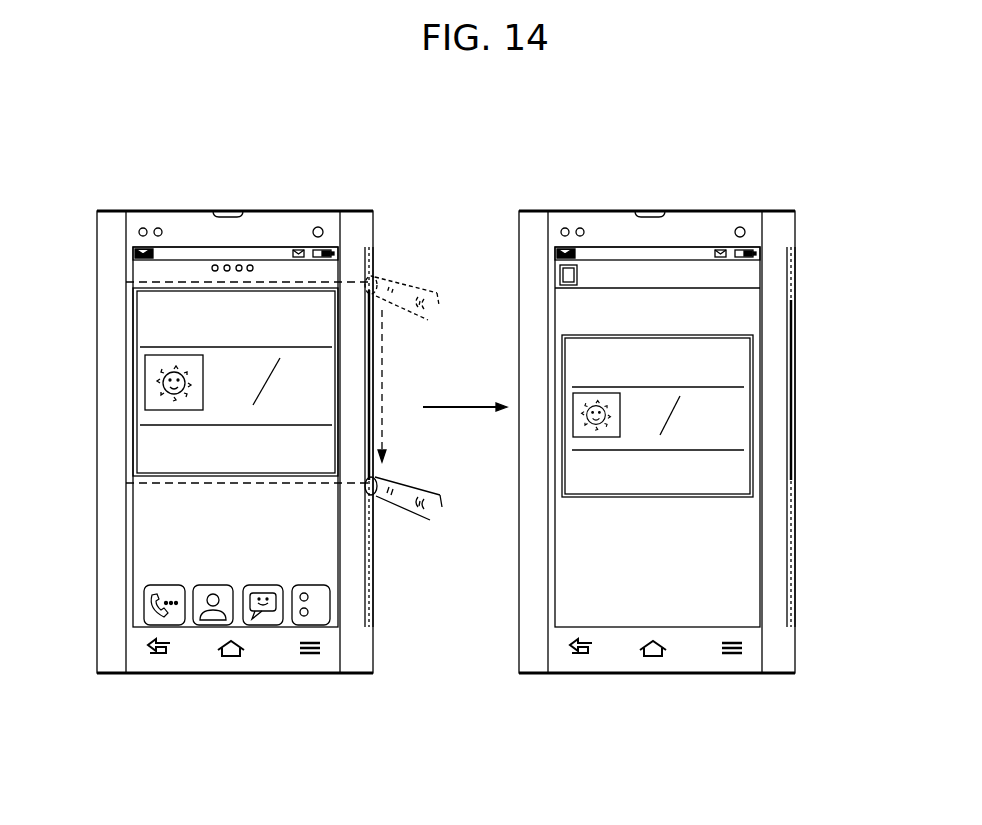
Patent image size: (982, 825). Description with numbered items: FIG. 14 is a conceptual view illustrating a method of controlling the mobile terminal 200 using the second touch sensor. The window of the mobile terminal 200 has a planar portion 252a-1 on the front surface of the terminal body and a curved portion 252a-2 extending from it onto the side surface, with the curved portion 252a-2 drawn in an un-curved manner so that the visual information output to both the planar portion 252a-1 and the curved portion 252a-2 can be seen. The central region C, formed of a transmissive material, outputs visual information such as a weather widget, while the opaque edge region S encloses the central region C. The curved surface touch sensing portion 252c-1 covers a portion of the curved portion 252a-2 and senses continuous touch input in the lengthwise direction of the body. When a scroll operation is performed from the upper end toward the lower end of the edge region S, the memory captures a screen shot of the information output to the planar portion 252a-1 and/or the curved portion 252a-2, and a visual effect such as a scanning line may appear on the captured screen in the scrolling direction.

The mobile terminal 200 is at (176, 192).
The planar portion 252a-1 is at (243, 252).
The curved portion 252a-2 is at (352, 252).
The curved surface touch sensing portion 252c-1 is at (375, 255).
The edge region S is at (367, 345).
The central region C is at (140, 538).